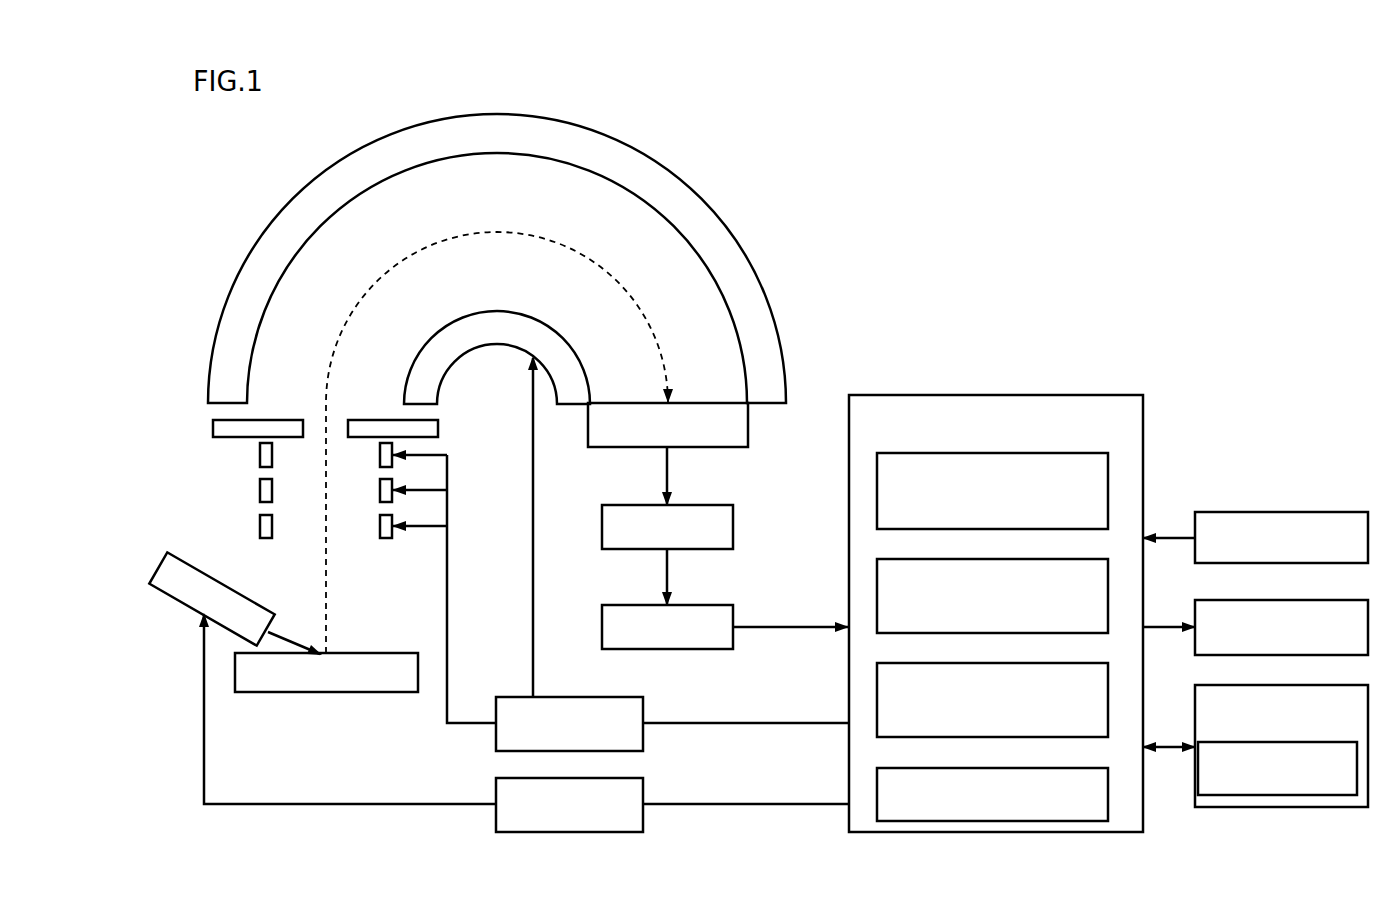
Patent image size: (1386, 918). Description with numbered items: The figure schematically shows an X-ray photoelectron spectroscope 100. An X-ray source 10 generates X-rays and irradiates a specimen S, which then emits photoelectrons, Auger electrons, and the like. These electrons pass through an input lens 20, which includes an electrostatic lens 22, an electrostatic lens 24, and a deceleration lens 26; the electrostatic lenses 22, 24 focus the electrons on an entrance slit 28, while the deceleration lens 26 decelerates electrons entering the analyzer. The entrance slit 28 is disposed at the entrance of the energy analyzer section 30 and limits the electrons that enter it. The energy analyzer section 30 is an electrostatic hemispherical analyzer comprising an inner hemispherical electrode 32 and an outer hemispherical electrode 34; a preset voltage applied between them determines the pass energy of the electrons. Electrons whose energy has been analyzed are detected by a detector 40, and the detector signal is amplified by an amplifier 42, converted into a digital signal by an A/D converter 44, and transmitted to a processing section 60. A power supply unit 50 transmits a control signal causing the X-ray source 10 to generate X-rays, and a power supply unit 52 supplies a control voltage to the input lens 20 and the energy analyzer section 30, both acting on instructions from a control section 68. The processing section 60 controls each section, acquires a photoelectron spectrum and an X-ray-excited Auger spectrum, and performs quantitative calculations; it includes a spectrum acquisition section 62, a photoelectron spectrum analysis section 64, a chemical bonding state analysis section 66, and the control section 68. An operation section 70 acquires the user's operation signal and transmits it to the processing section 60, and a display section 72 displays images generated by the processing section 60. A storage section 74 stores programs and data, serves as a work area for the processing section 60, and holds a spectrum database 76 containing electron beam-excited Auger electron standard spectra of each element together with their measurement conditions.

The X-ray photoelectron spectroscope 100 is at (1084, 138).
The X-ray source 10 is at (222, 593).
The specimen S is at (395, 652).
The input lens 20 is at (203, 453).
The electrostatic lens 22 is at (260, 526).
The electrostatic lens 24 is at (260, 490).
The deceleration lens 26 is at (260, 455).
The entrance slit 28 is at (222, 428).
The energy analyzer section 30 is at (311, 140).
The inner hemispherical electrode 32 is at (488, 333).
The outer hemispherical electrode 34 is at (459, 130).
The detector 40 is at (735, 430).
The amplifier 42 is at (718, 527).
The A/D converter 44 is at (680, 637).
The power supply unit 50 is at (628, 788).
The power supply unit 52 is at (602, 710).
The processing section 60 is at (1105, 395).
The spectrum acquisition section 62 is at (1088, 453).
The photoelectron spectrum analysis section 64 is at (1088, 559).
The chemical bonding state analysis section 66 is at (1100, 663).
The control section 68 is at (1100, 768).
The operation section 70 is at (1340, 512).
The display section 72 is at (1340, 600).
The storage section 74 is at (1340, 685).
The spectrum database 76 is at (1328, 742).